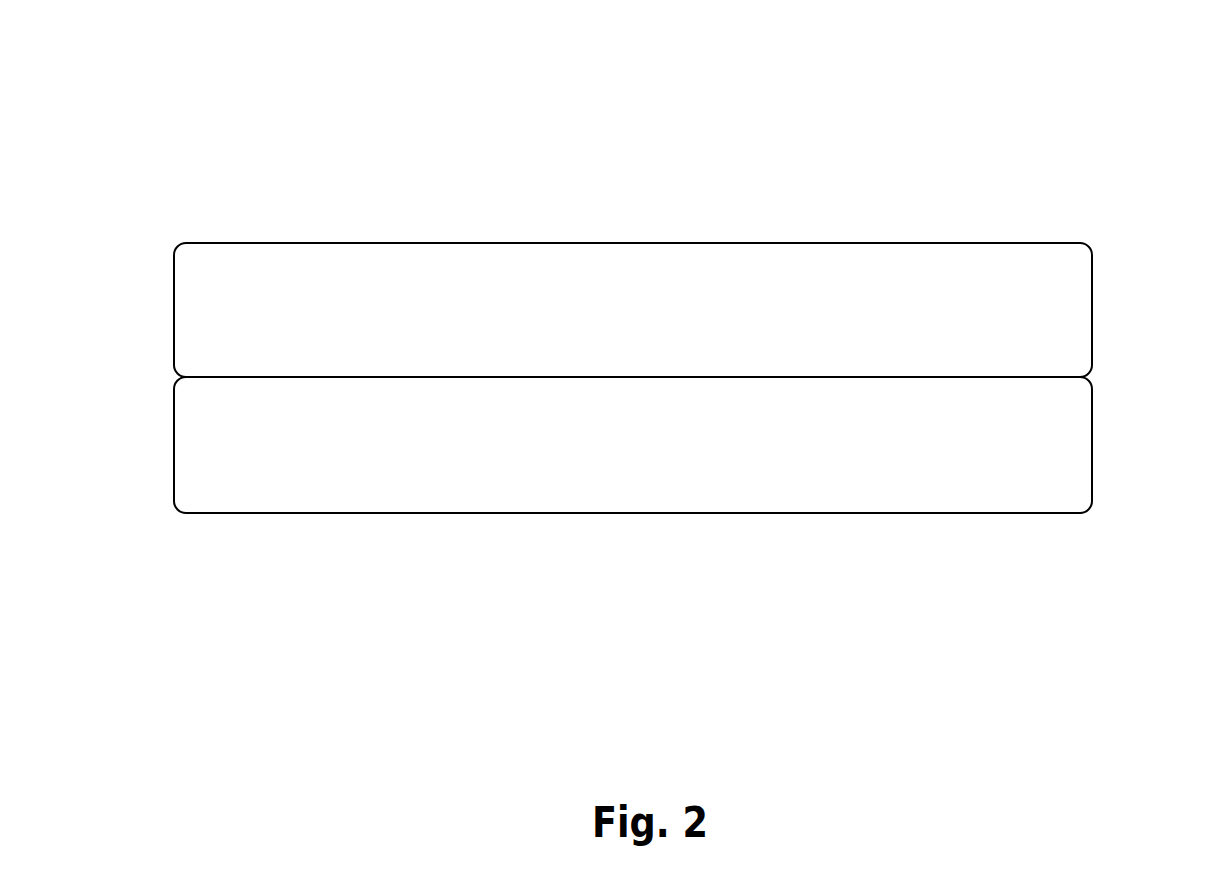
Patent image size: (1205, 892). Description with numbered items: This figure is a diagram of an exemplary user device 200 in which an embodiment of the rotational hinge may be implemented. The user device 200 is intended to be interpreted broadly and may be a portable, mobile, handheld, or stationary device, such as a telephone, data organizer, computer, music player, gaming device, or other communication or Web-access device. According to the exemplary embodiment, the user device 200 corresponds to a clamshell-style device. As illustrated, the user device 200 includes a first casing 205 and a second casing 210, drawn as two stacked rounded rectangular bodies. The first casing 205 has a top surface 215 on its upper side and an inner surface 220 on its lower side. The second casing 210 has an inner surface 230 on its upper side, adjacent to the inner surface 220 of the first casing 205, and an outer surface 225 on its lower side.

The user device 200 is at (230, 81).
The first casing 205 is at (1095, 310).
The second casing 210 is at (1094, 447).
The top surface 215 is at (633, 243).
The inner surface 220 is at (633, 377).
The outer surface 225 is at (633, 513).
The inner surface 230 is at (633, 377).